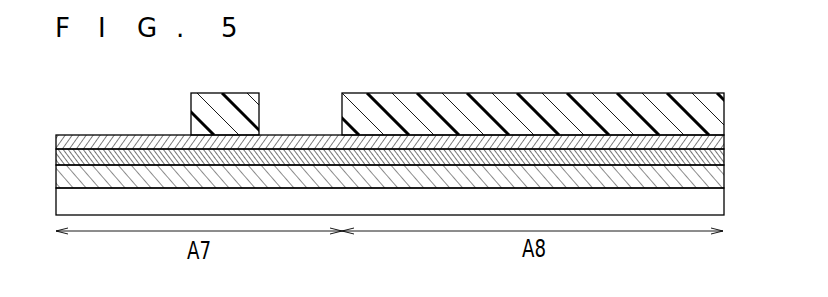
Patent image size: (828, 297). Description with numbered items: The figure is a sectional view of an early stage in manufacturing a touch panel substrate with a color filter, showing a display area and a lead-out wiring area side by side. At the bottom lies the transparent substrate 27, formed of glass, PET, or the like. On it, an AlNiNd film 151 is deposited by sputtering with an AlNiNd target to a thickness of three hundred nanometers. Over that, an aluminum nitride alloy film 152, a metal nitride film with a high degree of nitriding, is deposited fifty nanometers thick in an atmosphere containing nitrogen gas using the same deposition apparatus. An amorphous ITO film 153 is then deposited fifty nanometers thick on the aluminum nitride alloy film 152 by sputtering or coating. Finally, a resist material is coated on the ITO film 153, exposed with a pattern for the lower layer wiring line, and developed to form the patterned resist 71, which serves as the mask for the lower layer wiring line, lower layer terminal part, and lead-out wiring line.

The patterned resist 71 is at (240, 107).
The amorphous ITO film 153 is at (725, 143).
The aluminum nitride alloy film 152 is at (724, 158).
The AlNiNd film 151 is at (715, 177).
The transparent substrate 27 is at (713, 207).